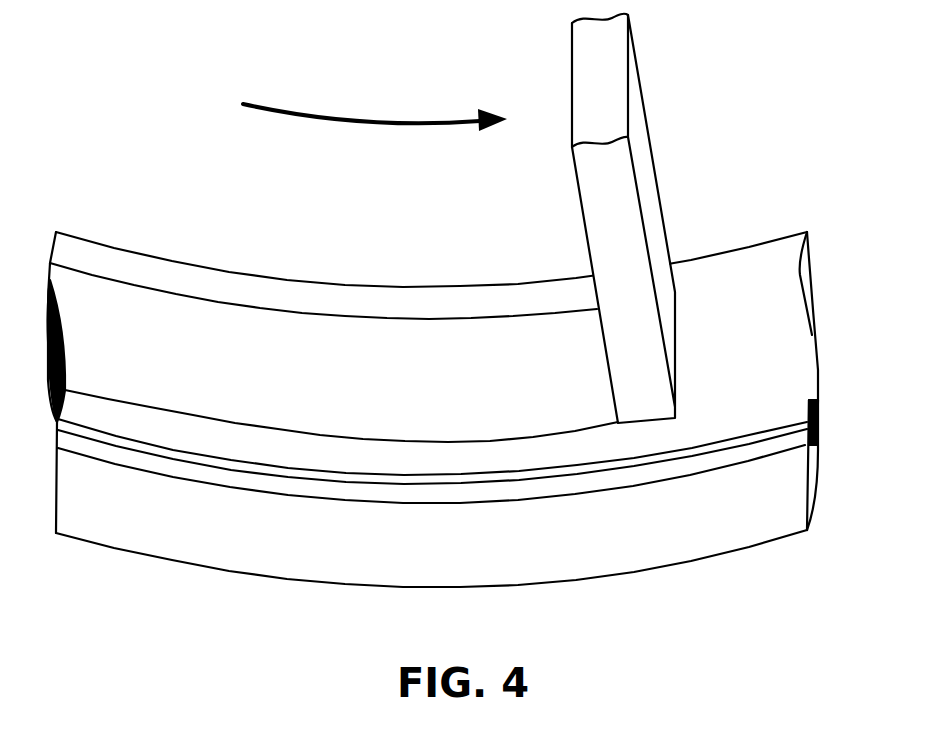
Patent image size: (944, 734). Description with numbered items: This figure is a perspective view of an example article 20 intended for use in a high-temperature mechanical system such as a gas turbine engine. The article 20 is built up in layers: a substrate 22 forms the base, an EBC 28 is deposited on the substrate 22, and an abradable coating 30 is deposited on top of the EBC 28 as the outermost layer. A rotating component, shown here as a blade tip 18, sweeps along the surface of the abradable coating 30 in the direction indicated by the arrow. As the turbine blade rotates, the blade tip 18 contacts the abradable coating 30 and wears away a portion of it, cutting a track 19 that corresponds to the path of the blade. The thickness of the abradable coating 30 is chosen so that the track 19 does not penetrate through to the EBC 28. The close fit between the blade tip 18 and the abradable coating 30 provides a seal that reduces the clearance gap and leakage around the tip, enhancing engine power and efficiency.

The blade tip 18 is at (676, 414).
The track 19 is at (460, 392).
The article 20 is at (461, 391).
The substrate 22 is at (783, 482).
The EBC 28 is at (797, 442).
The abradable coating 30 is at (800, 423).